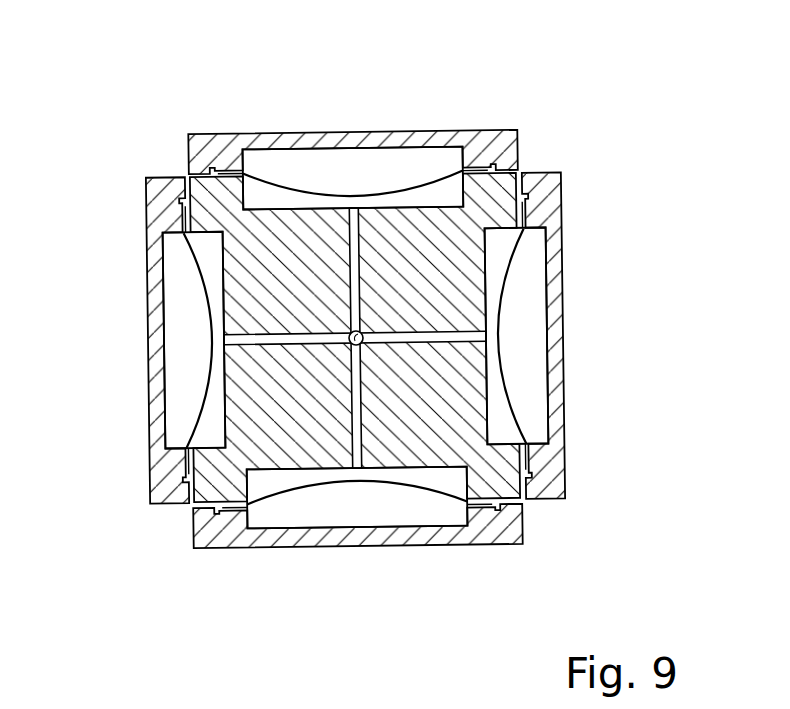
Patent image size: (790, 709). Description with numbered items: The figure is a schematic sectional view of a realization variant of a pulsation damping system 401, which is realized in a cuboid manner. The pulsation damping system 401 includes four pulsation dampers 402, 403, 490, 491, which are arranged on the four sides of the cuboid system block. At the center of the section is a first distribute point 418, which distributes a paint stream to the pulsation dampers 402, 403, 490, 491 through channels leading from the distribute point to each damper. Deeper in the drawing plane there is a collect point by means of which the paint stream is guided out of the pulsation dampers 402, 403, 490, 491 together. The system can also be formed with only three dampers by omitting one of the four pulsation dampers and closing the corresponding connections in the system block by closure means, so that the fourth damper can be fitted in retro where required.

The pulsation damping system 401 is at (566, 70).
The pulsation damper 402 is at (597, 190).
The pulsation damper 403 is at (101, 220).
The first distribute point 418 is at (362, 332).
The pulsation damper 490 is at (294, 102).
The pulsation damper 491 is at (308, 576).